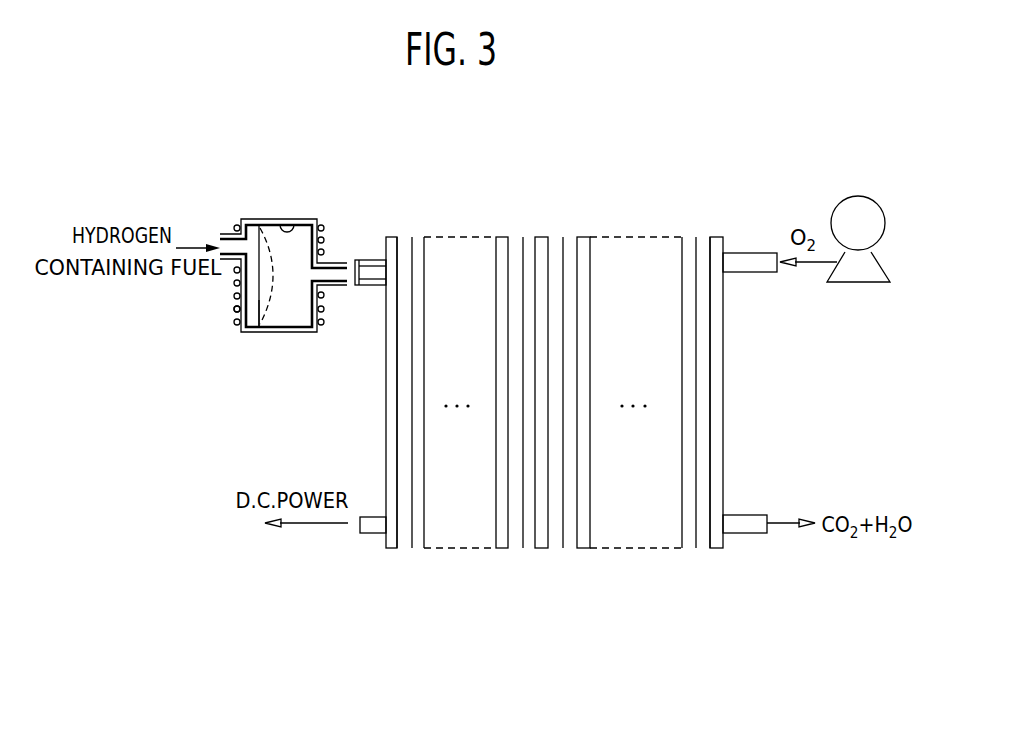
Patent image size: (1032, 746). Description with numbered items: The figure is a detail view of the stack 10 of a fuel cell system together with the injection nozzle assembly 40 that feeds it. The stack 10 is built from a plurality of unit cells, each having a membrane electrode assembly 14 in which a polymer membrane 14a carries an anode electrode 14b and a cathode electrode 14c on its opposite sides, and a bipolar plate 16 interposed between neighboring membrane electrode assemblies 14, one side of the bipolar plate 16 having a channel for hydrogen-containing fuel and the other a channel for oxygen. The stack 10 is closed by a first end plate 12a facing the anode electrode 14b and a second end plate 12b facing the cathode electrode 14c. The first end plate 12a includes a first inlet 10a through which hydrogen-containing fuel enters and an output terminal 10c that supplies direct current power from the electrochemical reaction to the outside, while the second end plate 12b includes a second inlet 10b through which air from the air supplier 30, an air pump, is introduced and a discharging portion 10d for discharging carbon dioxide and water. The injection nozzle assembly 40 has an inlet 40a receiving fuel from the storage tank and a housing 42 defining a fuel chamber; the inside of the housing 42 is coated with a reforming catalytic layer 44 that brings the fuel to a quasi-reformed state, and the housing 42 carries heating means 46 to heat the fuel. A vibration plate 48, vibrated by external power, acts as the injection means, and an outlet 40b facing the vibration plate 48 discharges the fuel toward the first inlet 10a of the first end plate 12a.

The stack 10 is at (660, 139).
The first inlet 10a is at (370, 259).
The second inlet 10b is at (750, 253).
The output terminal 10c is at (366, 533).
The discharging portion 10d is at (748, 533).
The first end plate 12a is at (392, 548).
The second end plate 12b is at (713, 548).
The membrane electrode assembly 14 is at (591, 451).
The polymer membrane 14a is at (535, 548).
The anode electrode 14b is at (523, 548).
The cathode electrode 14c is at (563, 548).
The bipolar plate 16 is at (502, 237).
The air supplier 30 is at (860, 282).
The injection nozzle assembly 40 is at (273, 349).
The inlet 40a is at (234, 226).
The outlet 40b is at (312, 272).
The housing 42 is at (258, 218).
The reforming catalytic layer 44 is at (290, 230).
The heating means 46 is at (234, 310).
The vibration plate 48 is at (259, 316).